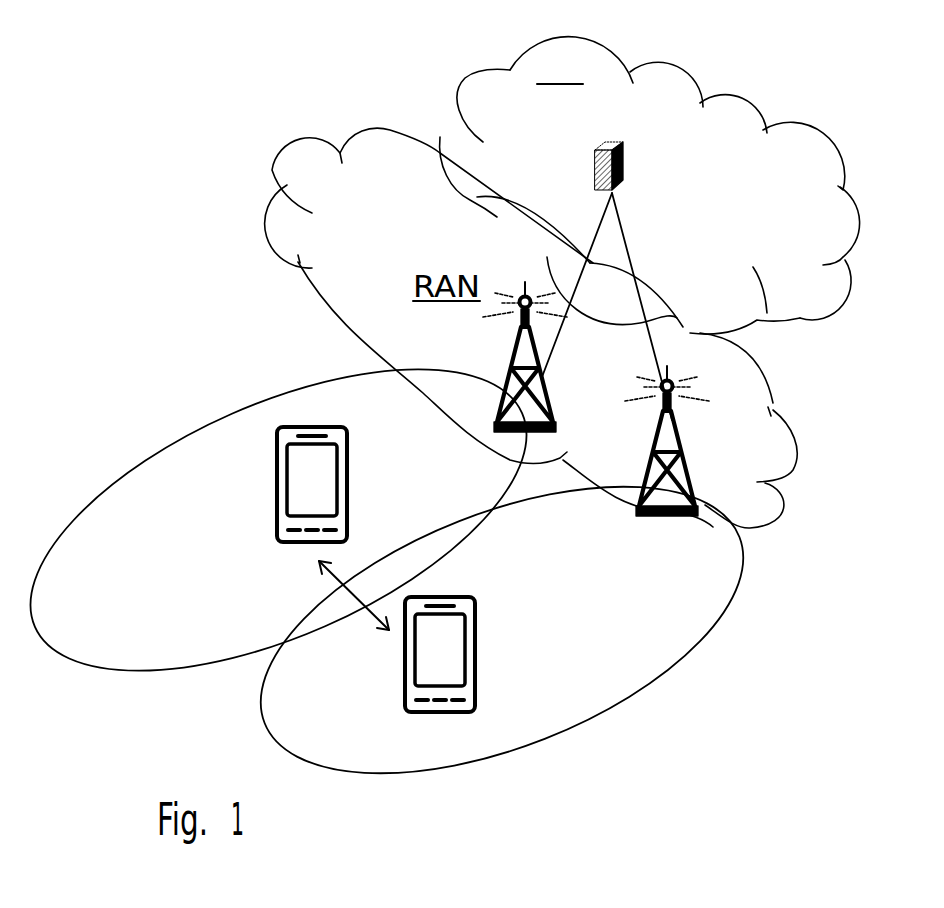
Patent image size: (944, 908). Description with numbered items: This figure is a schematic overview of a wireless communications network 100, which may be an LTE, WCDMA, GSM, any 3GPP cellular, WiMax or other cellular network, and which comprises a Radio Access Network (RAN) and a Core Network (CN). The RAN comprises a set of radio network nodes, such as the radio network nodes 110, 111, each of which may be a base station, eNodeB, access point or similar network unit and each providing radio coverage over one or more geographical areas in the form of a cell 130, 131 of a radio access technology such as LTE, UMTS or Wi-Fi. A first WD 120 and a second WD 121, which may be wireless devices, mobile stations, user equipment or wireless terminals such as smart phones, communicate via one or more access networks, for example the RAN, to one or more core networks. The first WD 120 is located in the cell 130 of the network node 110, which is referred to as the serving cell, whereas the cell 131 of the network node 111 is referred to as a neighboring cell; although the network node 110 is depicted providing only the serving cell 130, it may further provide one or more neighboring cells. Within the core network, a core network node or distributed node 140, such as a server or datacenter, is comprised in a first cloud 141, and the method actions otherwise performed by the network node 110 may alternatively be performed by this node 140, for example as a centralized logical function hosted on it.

The wireless communications network 100 is at (322, 65).
The radio network node 110 is at (513, 368).
The radio network node 111 is at (680, 457).
The first WD 120 is at (349, 449).
The second WD 121 is at (477, 620).
The cell 130 is at (230, 537).
The cell 131 is at (623, 647).
The distributed node 140 is at (622, 165).
The first cloud 141 is at (785, 236).